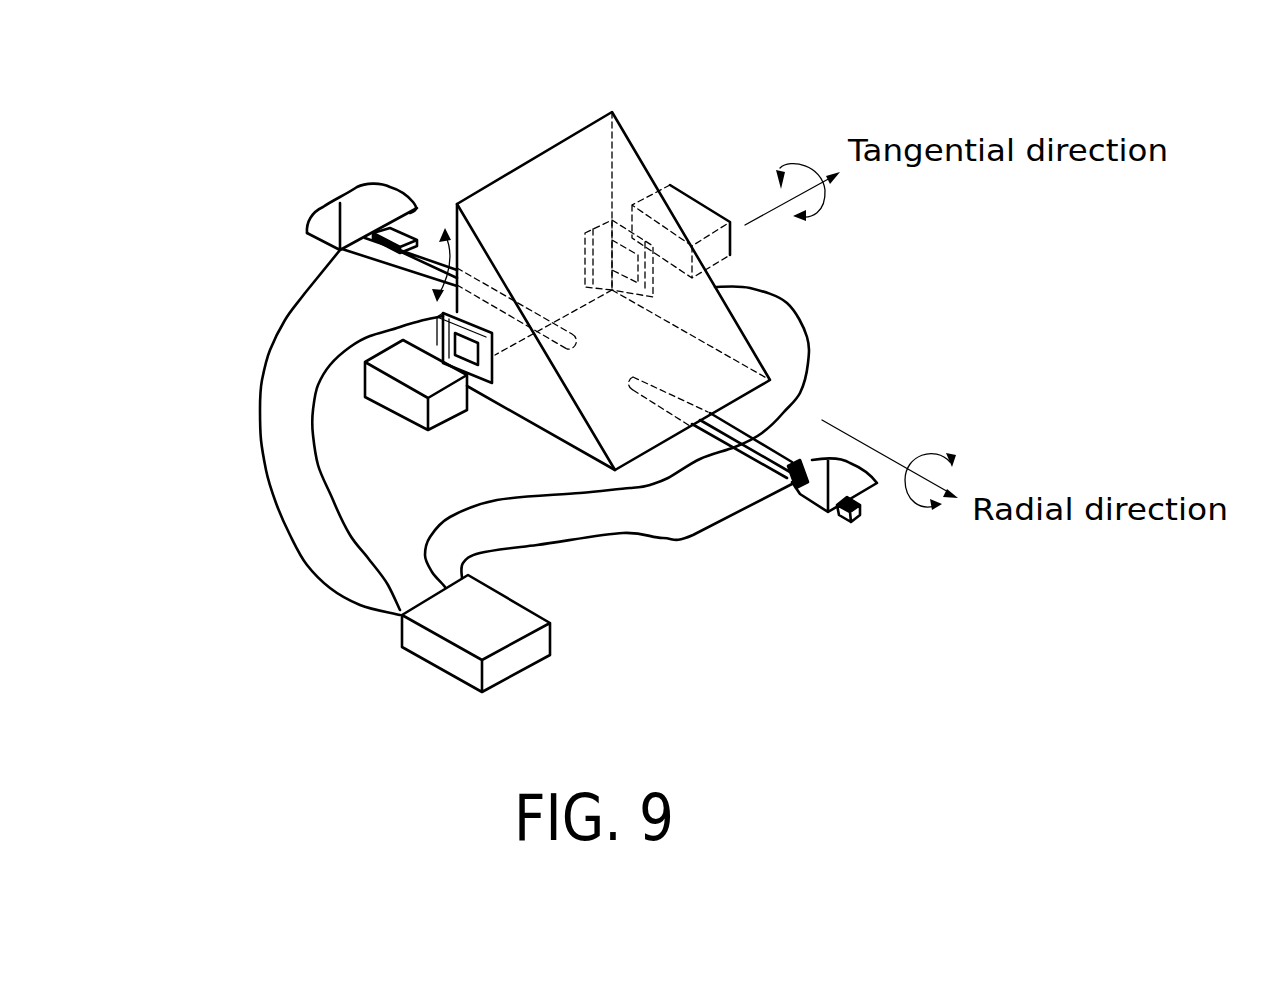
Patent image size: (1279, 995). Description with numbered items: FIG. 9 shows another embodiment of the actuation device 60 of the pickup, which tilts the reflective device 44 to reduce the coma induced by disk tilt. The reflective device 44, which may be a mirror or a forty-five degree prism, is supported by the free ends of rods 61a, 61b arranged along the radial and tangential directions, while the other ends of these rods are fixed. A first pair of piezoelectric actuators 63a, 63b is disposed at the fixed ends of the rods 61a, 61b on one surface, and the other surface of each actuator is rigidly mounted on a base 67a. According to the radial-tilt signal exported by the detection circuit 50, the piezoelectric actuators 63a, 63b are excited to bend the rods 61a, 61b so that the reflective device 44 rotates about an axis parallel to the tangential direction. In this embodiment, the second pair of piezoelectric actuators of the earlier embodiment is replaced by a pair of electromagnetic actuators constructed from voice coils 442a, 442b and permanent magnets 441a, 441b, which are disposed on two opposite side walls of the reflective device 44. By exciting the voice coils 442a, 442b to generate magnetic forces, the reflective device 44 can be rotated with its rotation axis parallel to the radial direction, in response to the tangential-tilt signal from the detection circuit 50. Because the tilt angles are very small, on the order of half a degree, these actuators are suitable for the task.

The reflective device 44 is at (568, 148).
The voice coil 442b is at (586, 237).
The permanent magnet 441b is at (730, 220).
The base 67a is at (330, 222).
The piezoelectric actuator 63a is at (407, 230).
The rod 61a is at (420, 253).
The permanent magnet 441a is at (407, 406).
The voice coil 442a is at (478, 383).
The rod 61b is at (770, 445).
The piezoelectric actuator 63b is at (788, 487).
The actuation device 60 is at (245, 222).
The detection circuit 50 is at (517, 627).